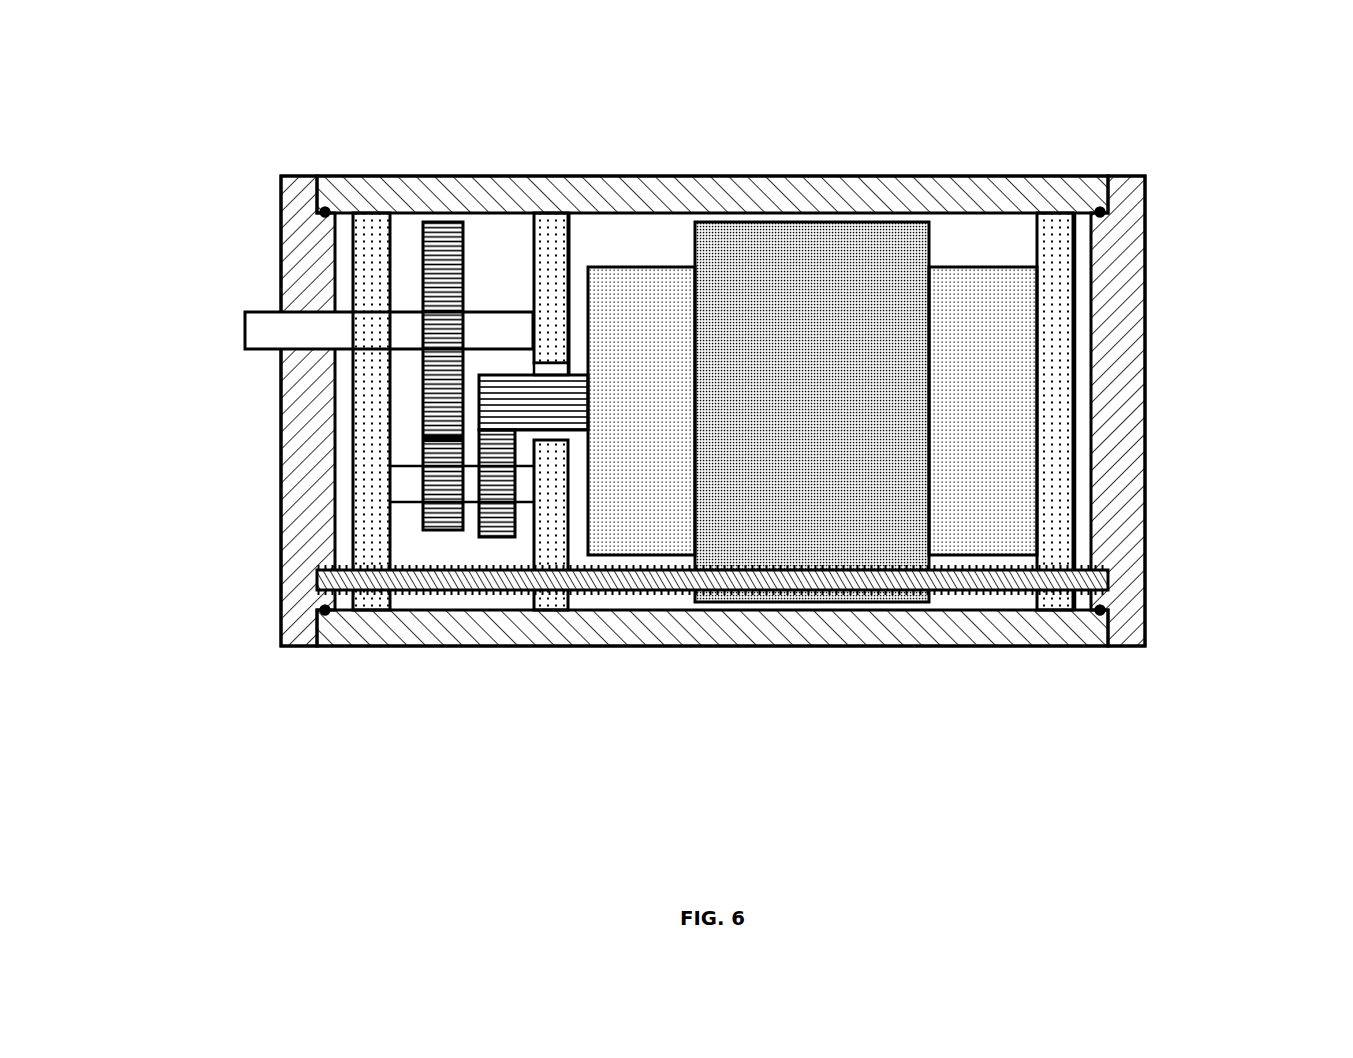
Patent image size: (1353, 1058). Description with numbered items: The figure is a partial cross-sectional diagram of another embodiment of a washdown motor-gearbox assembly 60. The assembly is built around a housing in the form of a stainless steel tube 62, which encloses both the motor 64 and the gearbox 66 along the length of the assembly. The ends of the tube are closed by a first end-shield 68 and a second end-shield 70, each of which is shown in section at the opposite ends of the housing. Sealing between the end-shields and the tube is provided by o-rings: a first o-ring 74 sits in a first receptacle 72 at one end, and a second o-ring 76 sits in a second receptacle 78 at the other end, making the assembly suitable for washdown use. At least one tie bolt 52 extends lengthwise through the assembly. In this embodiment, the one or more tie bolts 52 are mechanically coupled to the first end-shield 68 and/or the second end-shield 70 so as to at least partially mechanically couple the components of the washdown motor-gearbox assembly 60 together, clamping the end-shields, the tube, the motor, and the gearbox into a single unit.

The tie bolt 52 is at (963, 593).
The motor-gearbox assembly 60 is at (528, 719).
The stainless steel tube 62 is at (532, 176).
The motor 64 is at (841, 247).
The gearbox 66 is at (460, 655).
The first end-shield 68 is at (1146, 448).
The second end-shield 70 is at (280, 466).
The first o-ring receptacle 72 is at (1111, 216).
The first o-ring 74 is at (1222, 411).
The second o-ring 76 is at (313, 214).
The second o-ring receptacle 78 is at (203, 411).